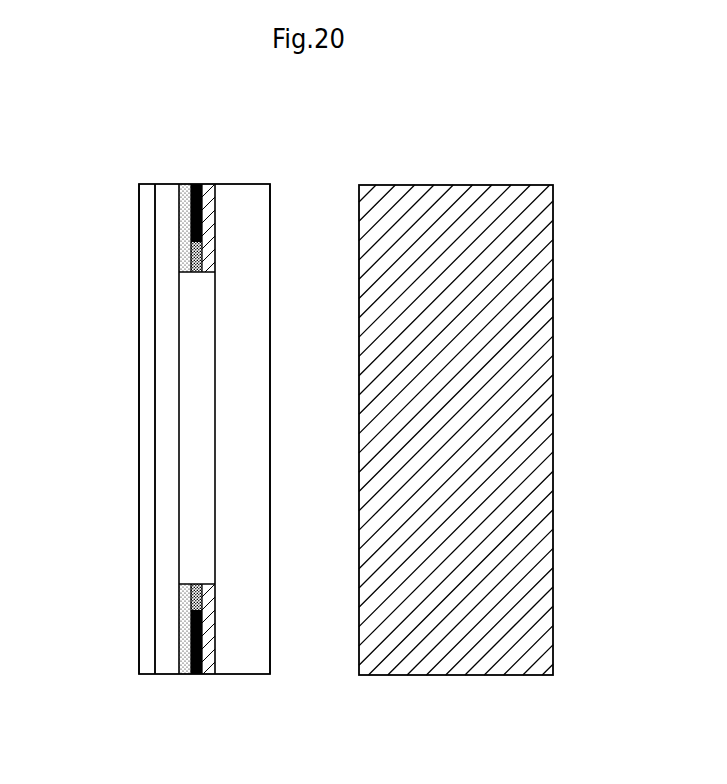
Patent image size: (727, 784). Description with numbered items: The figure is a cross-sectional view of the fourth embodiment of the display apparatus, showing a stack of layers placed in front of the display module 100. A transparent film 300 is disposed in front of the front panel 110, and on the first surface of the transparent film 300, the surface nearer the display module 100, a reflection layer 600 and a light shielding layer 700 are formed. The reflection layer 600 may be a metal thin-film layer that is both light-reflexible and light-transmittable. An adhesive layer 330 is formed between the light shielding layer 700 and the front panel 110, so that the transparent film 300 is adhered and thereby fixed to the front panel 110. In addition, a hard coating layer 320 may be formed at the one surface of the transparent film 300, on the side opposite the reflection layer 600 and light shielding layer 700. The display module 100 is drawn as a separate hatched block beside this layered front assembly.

The display module 100 is at (458, 198).
The front panel 110 is at (265, 354).
The transparent film 300 is at (162, 465).
The hard coating layer 320 is at (147, 390).
The adhesive layer 330 is at (208, 208).
The reflection layer 600 is at (185, 183).
The light shielding layer 700 is at (197, 183).